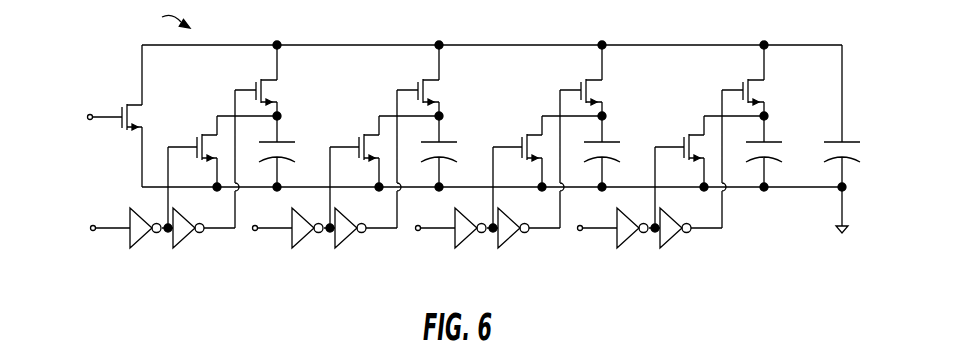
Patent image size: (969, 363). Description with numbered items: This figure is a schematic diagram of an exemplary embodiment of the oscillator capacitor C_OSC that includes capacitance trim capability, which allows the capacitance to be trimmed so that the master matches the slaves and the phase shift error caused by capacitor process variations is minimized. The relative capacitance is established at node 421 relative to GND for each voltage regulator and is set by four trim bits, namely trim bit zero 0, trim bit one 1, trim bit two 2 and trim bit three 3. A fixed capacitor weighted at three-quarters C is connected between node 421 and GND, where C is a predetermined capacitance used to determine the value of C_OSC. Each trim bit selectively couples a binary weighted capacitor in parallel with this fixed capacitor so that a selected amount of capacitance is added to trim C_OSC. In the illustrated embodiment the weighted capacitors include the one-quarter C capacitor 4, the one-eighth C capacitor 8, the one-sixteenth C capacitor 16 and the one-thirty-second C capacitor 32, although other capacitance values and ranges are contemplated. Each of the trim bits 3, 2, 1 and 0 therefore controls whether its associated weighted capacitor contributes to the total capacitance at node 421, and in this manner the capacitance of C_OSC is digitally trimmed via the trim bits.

The node 421 is at (439, 45).
The (1/4)C capacitor 4 is at (302, 151).
The (1/8)C capacitor 8 is at (460, 151).
The (1/16)C capacitor 16 is at (631, 151).
The (1/32)C capacitor 32 is at (789, 149).
The TB3 trim bit input buffer 3 is at (162, 232).
The TB2 trim bit input buffer 2 is at (324, 232).
The TB1 trim bit input buffer 1 is at (487, 232).
The TB0 trim bit input buffer 0 is at (648, 233).